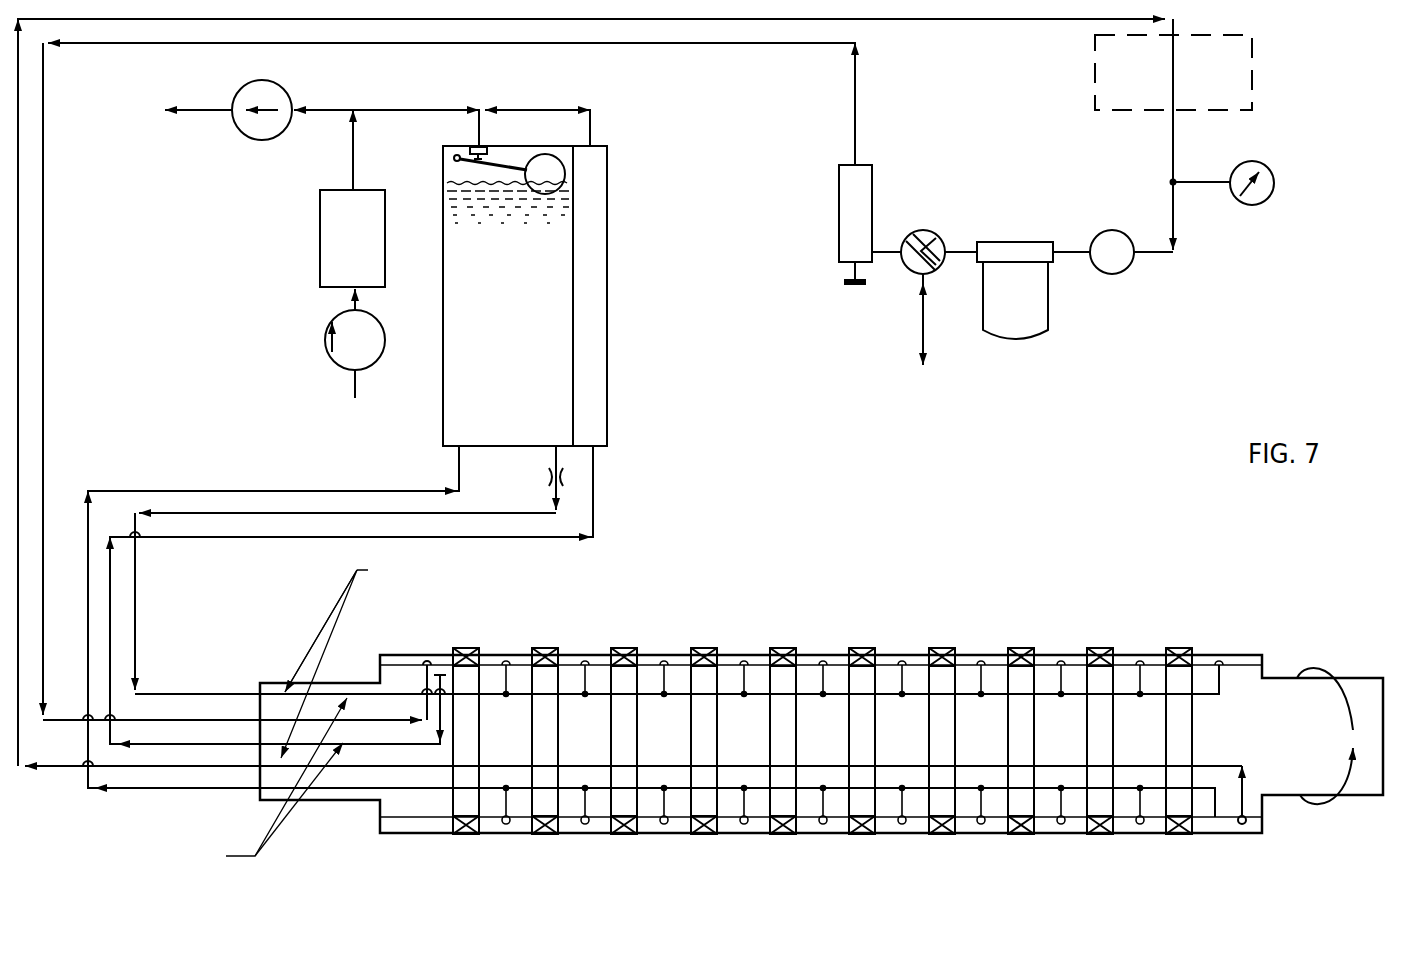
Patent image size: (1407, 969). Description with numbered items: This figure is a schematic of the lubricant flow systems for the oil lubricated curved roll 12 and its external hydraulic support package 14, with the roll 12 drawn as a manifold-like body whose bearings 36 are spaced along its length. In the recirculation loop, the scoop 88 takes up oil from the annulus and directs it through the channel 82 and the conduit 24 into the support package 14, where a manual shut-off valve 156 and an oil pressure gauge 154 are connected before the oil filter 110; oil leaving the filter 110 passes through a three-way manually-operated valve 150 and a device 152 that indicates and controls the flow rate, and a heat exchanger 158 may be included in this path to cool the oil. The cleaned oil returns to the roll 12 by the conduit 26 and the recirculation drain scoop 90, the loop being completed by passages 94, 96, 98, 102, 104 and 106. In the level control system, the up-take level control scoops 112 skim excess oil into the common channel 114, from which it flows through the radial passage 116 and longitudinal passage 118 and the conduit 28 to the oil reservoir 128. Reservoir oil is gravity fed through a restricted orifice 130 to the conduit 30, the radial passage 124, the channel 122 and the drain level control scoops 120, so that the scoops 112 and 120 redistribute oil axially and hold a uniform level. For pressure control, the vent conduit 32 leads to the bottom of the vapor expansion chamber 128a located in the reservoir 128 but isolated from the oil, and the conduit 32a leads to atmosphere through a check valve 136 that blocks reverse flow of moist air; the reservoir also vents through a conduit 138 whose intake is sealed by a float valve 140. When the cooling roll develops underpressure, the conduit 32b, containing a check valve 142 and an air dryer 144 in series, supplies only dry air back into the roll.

The curved roll 12 is at (707, 628).
The hydraulic support package 14 is at (905, 455).
The conduit 24 is at (988, 21).
The conduit 26 is at (763, 43).
The conduit 28 is at (283, 490).
The conduit 30 is at (365, 512).
The conduit 32 is at (593, 516).
The conduit 32a is at (545, 108).
The conduit 32b is at (357, 140).
The bearings 36 is at (1098, 648).
The channel 82 is at (1208, 757).
The scoop 88 is at (1242, 826).
The recirculation drain scoop 90 is at (428, 658).
The passage 94 is at (1325, 736).
The passage 96 is at (1325, 736).
The passage 98 is at (1325, 736).
The passage 102 is at (1325, 736).
The passage 104 is at (1325, 736).
The passage 106 is at (367, 716).
The oil filter 110 is at (1050, 325).
The level control scoops 112 is at (901, 826).
The channel 114 is at (965, 796).
The radial passage 116 is at (797, 802).
The longitudinal passage 118 is at (797, 802).
The level control scoops 120 is at (903, 661).
The channel 122 is at (1199, 648).
The radial passage 124 is at (1122, 690).
The oil reservoir 128 is at (452, 410).
The vapor expansion chamber 128a is at (597, 368).
The restricted orifice 130 is at (565, 480).
The check valve 136 is at (249, 85).
The conduit 138 is at (481, 128).
The float valve 140 is at (553, 173).
The check valve 142 is at (331, 360).
The air dryer 144 is at (318, 243).
The three-way manually-operated valve 150 is at (912, 234).
The device 152 is at (838, 212).
The oil pressure gauge 154 is at (1270, 198).
The manual shut-off valve 156 is at (1130, 267).
The heat exchanger 158 is at (1252, 64).